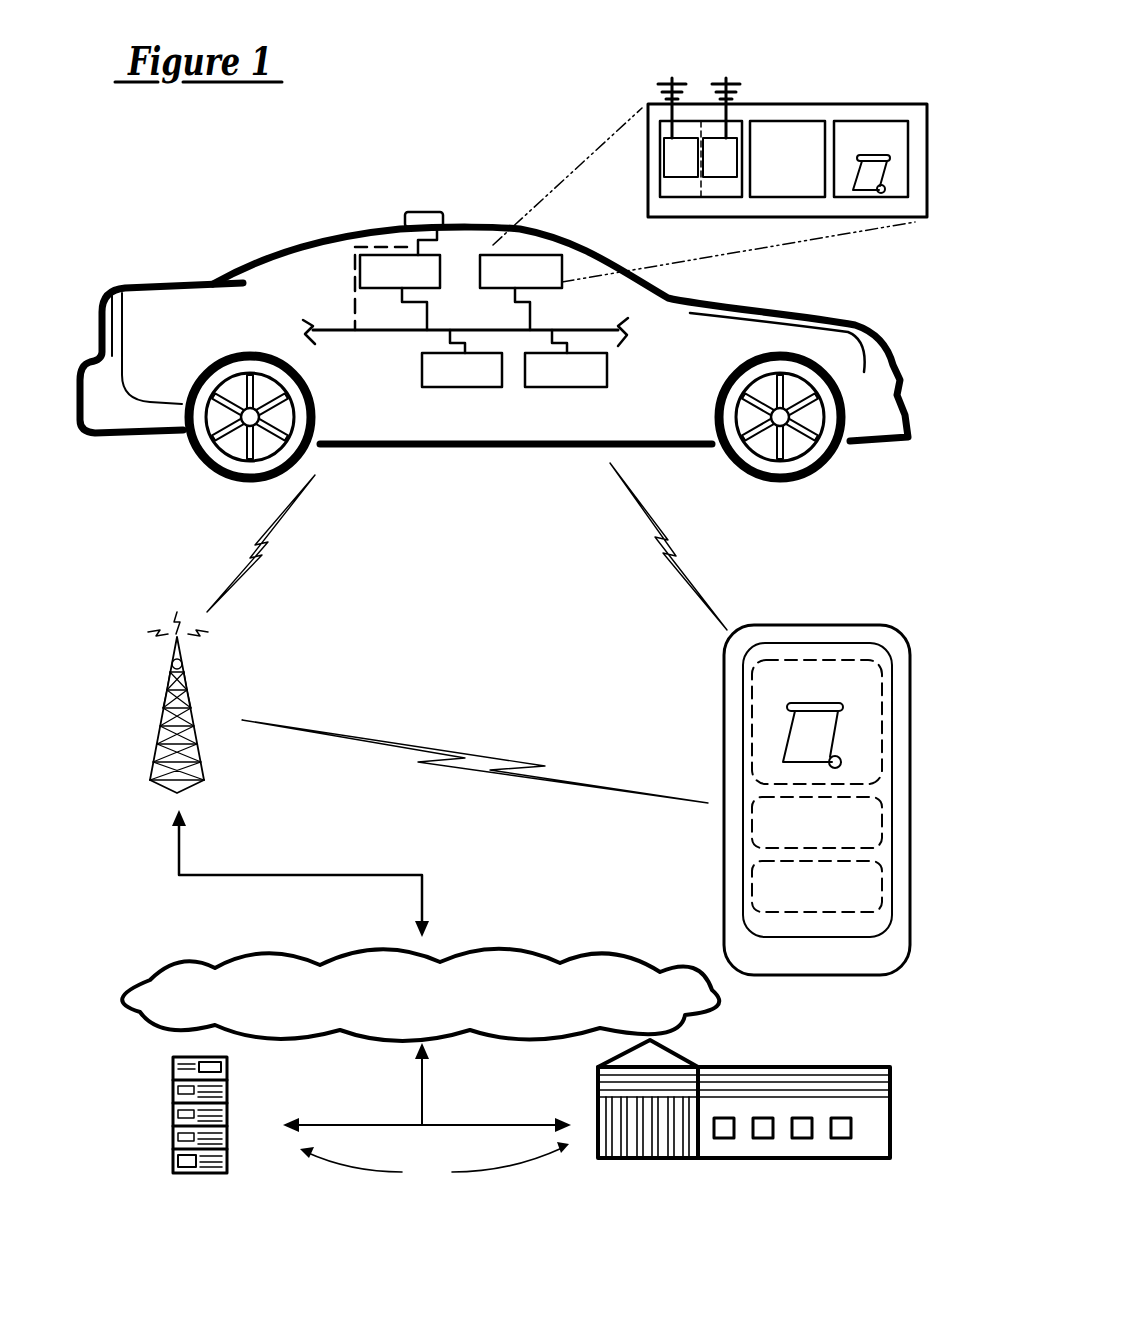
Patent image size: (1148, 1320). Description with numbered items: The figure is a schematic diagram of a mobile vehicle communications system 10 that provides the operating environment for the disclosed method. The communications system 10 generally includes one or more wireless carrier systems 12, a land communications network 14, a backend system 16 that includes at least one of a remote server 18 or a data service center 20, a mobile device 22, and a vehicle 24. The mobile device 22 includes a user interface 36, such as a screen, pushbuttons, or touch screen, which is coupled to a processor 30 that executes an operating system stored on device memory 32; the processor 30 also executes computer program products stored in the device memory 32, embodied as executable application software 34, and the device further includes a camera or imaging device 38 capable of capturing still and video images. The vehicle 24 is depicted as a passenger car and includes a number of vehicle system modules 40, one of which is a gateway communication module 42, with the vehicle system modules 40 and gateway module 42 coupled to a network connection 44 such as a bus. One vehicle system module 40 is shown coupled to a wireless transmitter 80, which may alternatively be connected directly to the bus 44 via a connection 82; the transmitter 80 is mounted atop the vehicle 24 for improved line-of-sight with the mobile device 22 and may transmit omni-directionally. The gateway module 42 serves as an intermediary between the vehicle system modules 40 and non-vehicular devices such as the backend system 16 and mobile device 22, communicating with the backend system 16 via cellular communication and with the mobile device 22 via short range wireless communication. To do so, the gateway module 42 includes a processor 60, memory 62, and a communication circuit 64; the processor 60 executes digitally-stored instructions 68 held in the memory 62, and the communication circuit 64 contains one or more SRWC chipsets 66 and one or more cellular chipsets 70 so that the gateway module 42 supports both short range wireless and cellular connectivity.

The mobile vehicle communications system 10 is at (405, 122).
The wireless carrier system 12 is at (166, 718).
The land communications network 14 is at (419, 1009).
The backend system 16 is at (434, 1162).
The remote server 18 is at (172, 1077).
The data service center 20 is at (598, 1093).
The mobile device 22 is at (906, 626).
The vehicle 24 is at (764, 302).
The processor 30 is at (806, 834).
The device memory 32 is at (806, 699).
The executable application software 34 is at (803, 754).
The user interface 36 is at (743, 694).
The camera 38 is at (806, 897).
The vehicle system module 40 is at (388, 283).
The gateway communication module 42 is at (509, 283).
The network connection 44 is at (582, 318).
The processor 60 is at (783, 149).
The memory 62 is at (863, 149).
The communication circuit 64 is at (670, 137).
The SRWC chipset 66 is at (669, 169).
The digitally-stored instructions 68 is at (892, 173).
The cellular chipset 70 is at (708, 169).
The wireless transmitter 80 is at (419, 205).
The connection 82 is at (355, 268).